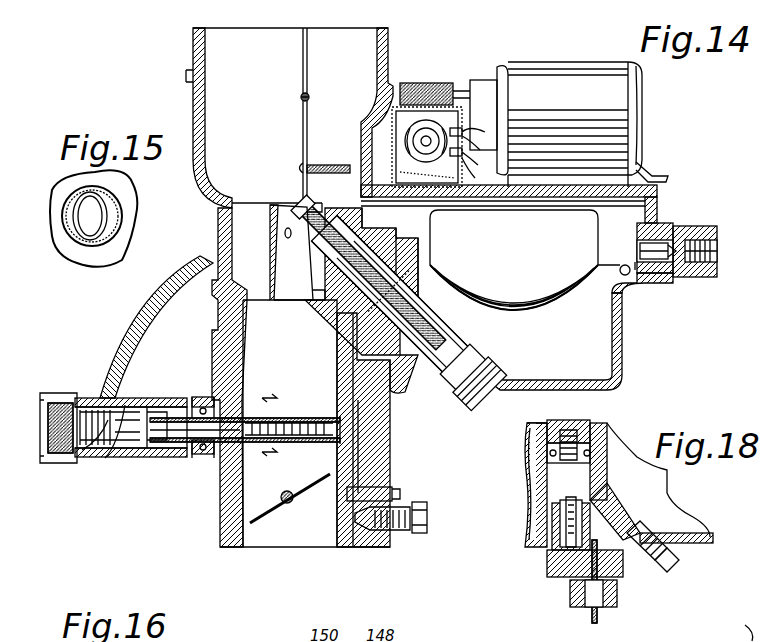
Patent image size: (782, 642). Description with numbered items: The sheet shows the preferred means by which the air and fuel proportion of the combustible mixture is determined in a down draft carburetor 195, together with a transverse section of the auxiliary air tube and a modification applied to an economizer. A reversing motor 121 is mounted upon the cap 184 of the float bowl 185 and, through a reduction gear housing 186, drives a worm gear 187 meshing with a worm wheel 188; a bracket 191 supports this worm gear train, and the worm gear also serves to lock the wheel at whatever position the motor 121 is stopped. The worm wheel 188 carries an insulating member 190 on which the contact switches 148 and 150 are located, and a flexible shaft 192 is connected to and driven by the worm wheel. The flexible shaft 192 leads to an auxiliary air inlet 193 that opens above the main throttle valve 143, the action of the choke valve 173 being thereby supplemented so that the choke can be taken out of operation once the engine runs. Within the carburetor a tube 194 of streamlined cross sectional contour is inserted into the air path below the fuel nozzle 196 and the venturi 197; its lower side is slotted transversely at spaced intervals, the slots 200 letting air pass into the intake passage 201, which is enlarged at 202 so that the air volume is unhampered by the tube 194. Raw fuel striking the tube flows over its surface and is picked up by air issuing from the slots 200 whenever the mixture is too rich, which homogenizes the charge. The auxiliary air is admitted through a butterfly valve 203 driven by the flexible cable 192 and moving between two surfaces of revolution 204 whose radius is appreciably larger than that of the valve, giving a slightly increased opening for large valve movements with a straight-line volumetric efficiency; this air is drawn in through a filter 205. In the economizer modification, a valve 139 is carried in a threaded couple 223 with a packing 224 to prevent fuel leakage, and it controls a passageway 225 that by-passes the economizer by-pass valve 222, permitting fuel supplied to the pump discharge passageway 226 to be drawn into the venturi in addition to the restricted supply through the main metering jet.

In FIG. 14, the down draft carburetor 195 is at (190, 72).
In FIG. 14, the choke valve 173 is at (303, 53).
In FIG. 14, the insulating member 190 is at (428, 83).
In FIG. 14, the worm gear 187 is at (438, 82).
In FIG. 14, the reduction gear housing 186 is at (485, 87).
In FIG. 14, the worm wheel 188 is at (392, 125).
In FIG. 14, the contact switch 148 is at (463, 130).
In FIG. 14, the contact switch 150 is at (460, 168).
In FIG. 14, the reversing motor 121 is at (623, 110).
In FIG. 18, the reversing motor 121 is at (743, 623).
In FIG. 14, the cap 184 is at (657, 197).
In FIG. 14, the float bowl 185 is at (622, 340).
In FIG. 14, the bracket 191 is at (462, 200).
In FIG. 14, the enlarged intake passageway 202 is at (358, 434).
In FIG. 14, the intake passage 201 is at (328, 462).
In FIG. 14, the fuel nozzle 196 is at (300, 232).
In FIG. 14, the venturi 197 is at (272, 300).
In FIG. 14, the flexible shaft 192 is at (170, 302).
In FIG. 14, the auxiliary air inlet 193 is at (134, 455).
In FIG. 14, the tube 194 is at (210, 455).
In FIG. 15, the tube 194 is at (112, 200).
In FIG. 14, the butterfly valve 203 is at (105, 457).
In FIG. 14, the surfaces of revolution 204 is at (108, 418).
In FIG. 14, the filter 205 is at (44, 415).
In FIG. 14, the slots 200 is at (256, 441).
In FIG. 15, the slots 200 is at (114, 222).
In FIG. 14, the main throttle valve 143 is at (270, 522).
In FIG. 18, the pump discharge passageway 226 is at (533, 468).
In FIG. 18, the economizer by-pass valve 222 is at (552, 507).
In FIG. 18, the threaded couple 223 is at (570, 592).
In FIG. 18, the packing 224 is at (617, 593).
In FIG. 18, the passageway 225 is at (625, 580).
In FIG. 18, the valve 139 is at (590, 617).